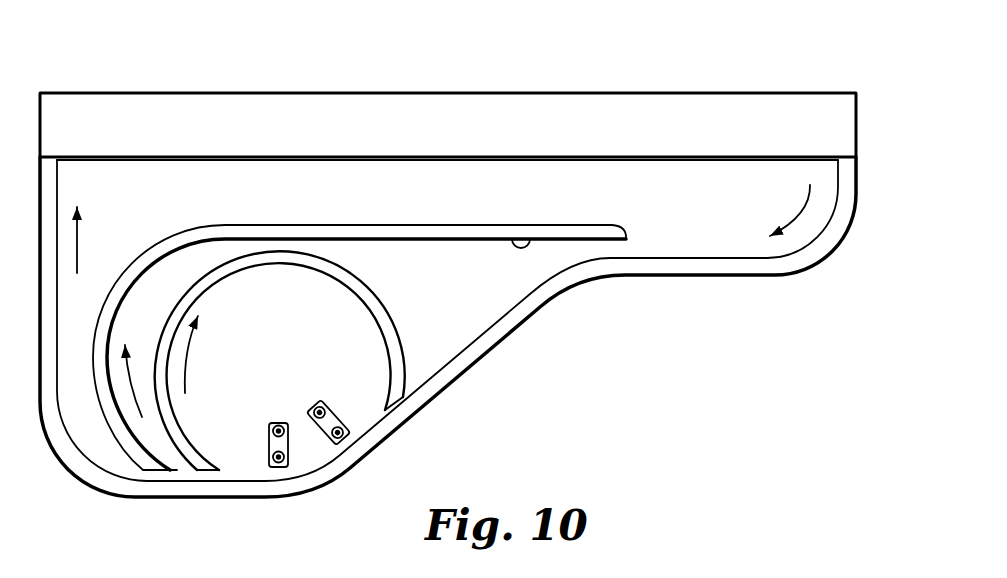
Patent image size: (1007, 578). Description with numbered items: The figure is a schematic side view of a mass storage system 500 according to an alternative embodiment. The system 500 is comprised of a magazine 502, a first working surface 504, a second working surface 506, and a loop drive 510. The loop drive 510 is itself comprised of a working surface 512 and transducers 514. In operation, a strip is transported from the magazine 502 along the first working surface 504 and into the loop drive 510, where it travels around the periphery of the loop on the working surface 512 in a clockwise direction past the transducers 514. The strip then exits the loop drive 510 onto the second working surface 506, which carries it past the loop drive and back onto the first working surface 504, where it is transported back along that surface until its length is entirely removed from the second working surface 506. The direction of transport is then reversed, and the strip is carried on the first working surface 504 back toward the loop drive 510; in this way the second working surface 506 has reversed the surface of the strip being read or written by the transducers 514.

The system 500 is at (554, 46).
The magazine 502 is at (682, 93).
The first working surface 504 is at (683, 260).
The second working surface 506 is at (529, 244).
The loop drive 510 is at (388, 301).
The working surface 512 is at (340, 281).
The transducers 514 is at (314, 407).